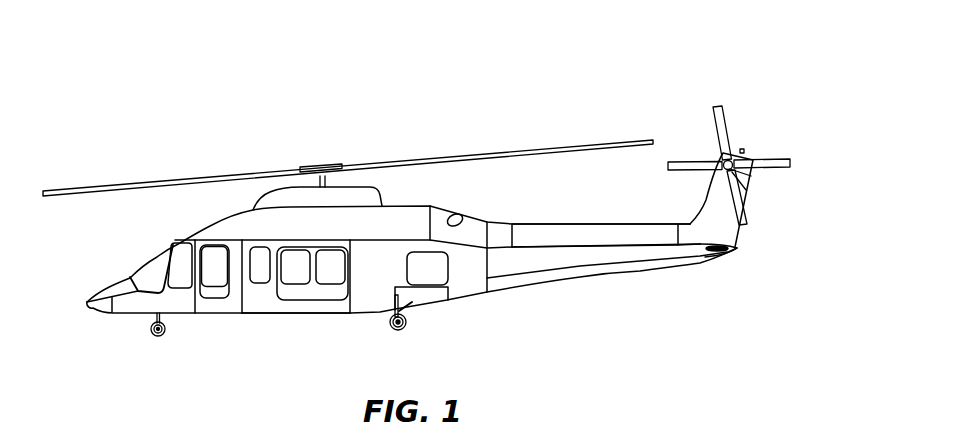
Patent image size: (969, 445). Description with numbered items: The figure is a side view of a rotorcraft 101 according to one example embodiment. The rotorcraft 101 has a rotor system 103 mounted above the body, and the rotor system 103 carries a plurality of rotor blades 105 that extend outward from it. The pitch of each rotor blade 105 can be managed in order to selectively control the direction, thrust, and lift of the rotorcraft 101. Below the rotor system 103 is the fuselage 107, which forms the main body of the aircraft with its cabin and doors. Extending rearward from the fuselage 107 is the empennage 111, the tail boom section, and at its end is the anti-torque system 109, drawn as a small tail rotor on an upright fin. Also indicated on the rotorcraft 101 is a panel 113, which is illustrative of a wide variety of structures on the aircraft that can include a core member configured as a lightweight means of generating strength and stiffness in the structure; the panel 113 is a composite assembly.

The rotorcraft 101 is at (232, 73).
The rotor system 103 is at (351, 145).
The rotor blades 105 is at (532, 148).
The fuselage 107 is at (255, 315).
The anti-torque system 109 is at (752, 139).
The empennage 111 is at (600, 278).
The panel 113 is at (448, 273).